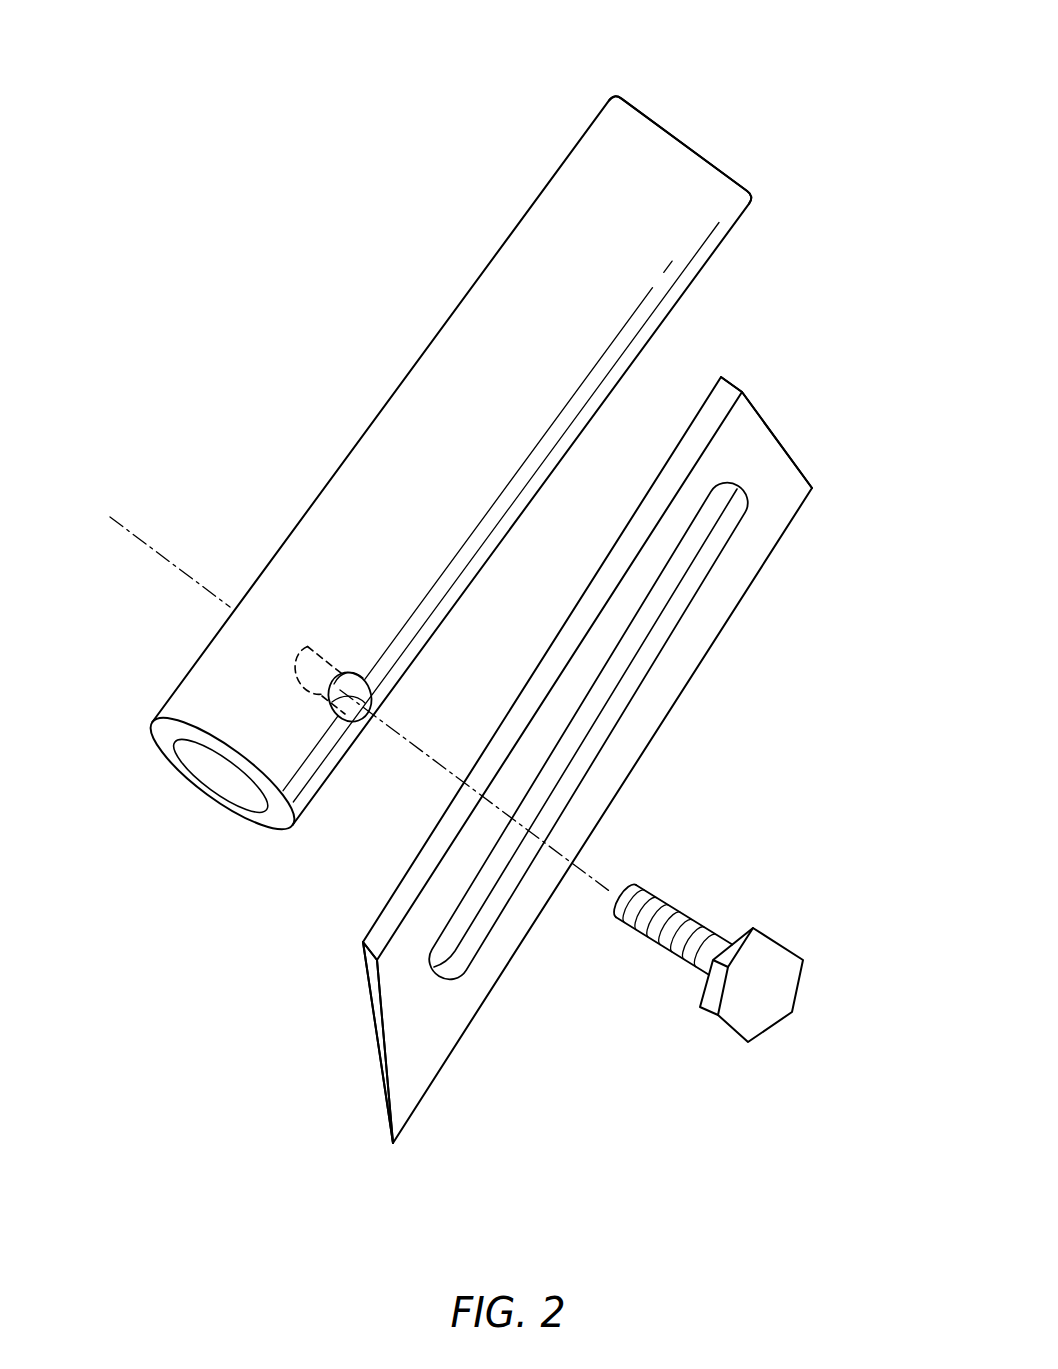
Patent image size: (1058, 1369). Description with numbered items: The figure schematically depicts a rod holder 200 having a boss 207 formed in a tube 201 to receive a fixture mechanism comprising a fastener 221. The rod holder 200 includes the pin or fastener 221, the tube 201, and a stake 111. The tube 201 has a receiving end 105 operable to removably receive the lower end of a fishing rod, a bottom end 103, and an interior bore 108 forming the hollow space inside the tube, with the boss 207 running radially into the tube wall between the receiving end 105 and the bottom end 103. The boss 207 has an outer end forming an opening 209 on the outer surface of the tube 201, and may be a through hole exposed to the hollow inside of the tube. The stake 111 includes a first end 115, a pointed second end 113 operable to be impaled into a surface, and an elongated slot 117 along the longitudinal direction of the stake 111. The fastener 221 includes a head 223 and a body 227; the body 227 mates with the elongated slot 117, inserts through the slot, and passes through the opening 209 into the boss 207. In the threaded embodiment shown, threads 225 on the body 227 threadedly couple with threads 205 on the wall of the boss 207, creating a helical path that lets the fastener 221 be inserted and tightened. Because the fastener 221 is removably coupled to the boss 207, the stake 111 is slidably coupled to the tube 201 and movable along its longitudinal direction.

The rod holder 200 is at (445, 132).
The tube 201 is at (422, 244).
The receiving end 105 is at (676, 115).
The bottom end 103 is at (152, 721).
The bore of tubular member 108 is at (171, 754).
The threads 205 is at (343, 722).
The boss 207 is at (337, 652).
The opening 209 is at (377, 694).
The stake 111 is at (872, 445).
The second end 113 is at (377, 1014).
The first end 115 is at (768, 426).
The elongated slot 117 is at (667, 636).
The fastener 221 is at (846, 964).
The head 223 is at (788, 949).
The threads 225 is at (667, 950).
The body 227 is at (661, 891).